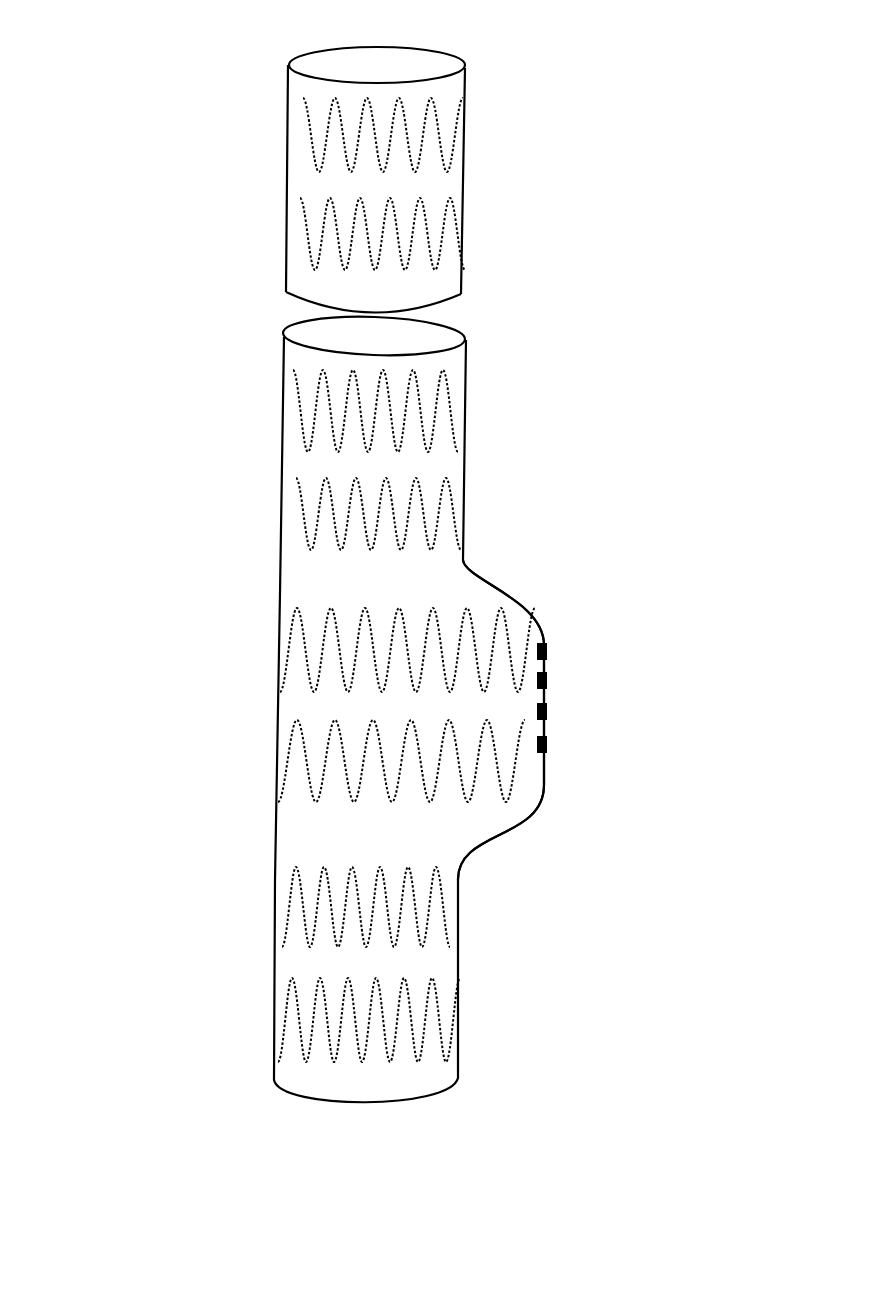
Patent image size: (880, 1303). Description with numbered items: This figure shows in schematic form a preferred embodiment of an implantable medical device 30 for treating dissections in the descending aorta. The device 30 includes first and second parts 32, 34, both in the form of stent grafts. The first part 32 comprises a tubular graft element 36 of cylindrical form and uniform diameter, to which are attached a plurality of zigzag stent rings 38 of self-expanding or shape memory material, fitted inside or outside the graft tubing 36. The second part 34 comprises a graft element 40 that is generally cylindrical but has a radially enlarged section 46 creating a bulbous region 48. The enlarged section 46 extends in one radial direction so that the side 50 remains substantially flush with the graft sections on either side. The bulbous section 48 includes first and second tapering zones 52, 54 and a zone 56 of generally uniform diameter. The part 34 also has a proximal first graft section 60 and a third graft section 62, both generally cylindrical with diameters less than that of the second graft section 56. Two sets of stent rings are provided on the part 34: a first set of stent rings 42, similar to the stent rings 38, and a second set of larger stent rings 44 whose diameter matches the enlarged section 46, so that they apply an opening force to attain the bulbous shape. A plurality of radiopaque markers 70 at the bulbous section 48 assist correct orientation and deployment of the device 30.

The implantable medical device 30 is at (566, 88).
The first part 32 is at (500, 190).
The second part 34 is at (483, 333).
The tubular graft element 36 is at (288, 86).
The stent rings 38 is at (318, 237).
The graft element 40 is at (290, 360).
The first set of stent rings 42 is at (340, 515).
The second set of stent rings 44 is at (340, 765).
The radially enlarged section 46 is at (672, 638).
The bulbous region 48 is at (600, 622).
The side 50 is at (266, 762).
The first tapering zone 52 is at (520, 605).
The second tapering zone 54 is at (498, 843).
The uniform diameter zone 56 is at (547, 762).
The first graft section 60 is at (566, 338).
The third graft section 62 is at (470, 884).
The radiopaque markers 70 is at (547, 677).